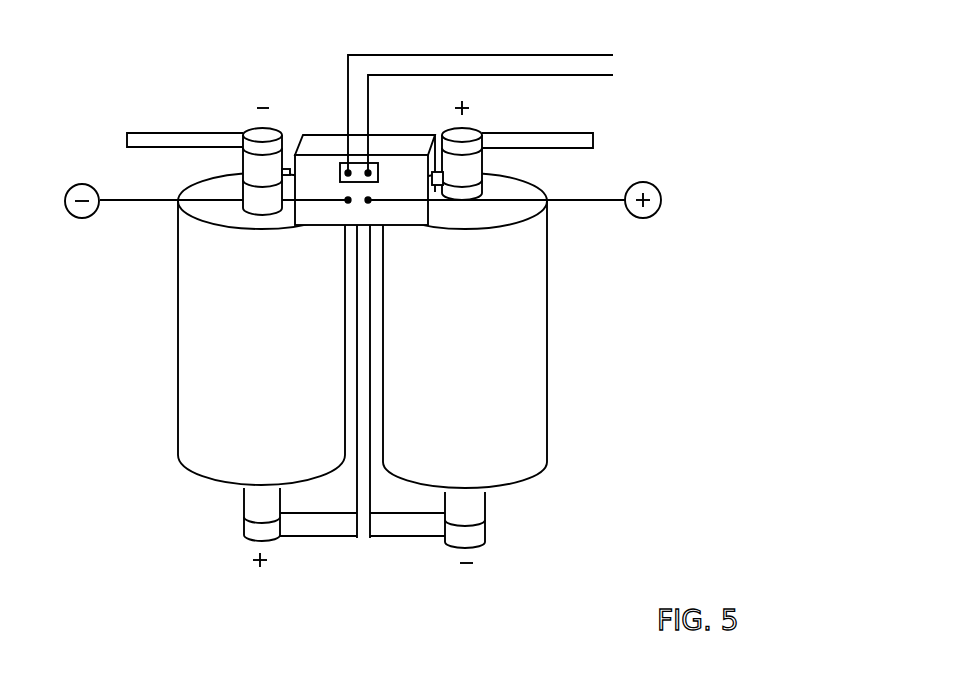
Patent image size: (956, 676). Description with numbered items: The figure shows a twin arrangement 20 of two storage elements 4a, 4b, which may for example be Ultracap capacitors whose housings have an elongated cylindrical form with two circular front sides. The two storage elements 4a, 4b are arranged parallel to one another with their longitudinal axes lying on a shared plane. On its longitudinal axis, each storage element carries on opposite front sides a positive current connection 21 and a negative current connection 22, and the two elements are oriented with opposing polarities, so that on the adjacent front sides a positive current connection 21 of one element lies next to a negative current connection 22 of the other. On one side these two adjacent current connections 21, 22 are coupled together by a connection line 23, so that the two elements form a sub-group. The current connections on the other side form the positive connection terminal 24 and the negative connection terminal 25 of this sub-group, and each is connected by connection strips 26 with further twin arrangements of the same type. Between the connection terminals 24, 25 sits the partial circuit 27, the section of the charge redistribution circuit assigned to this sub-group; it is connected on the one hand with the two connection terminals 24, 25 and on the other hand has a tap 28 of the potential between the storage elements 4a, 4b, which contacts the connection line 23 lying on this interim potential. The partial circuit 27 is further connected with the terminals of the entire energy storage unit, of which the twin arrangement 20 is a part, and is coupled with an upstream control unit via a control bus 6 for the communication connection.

The storage element 4a is at (482, 350).
The storage element 4b is at (283, 347).
The control bus 6 is at (525, 70).
The twin arrangement 20 is at (378, 293).
The positive current connection 21 is at (243, 498).
The negative current connection 22 is at (472, 503).
The connection line 23 is at (403, 527).
The positive connection terminal 24 is at (473, 163).
The negative connection terminal 25 is at (247, 162).
The connection strip 26 is at (197, 137).
The partial circuit 27 is at (318, 145).
The tap 28 is at (357, 487).